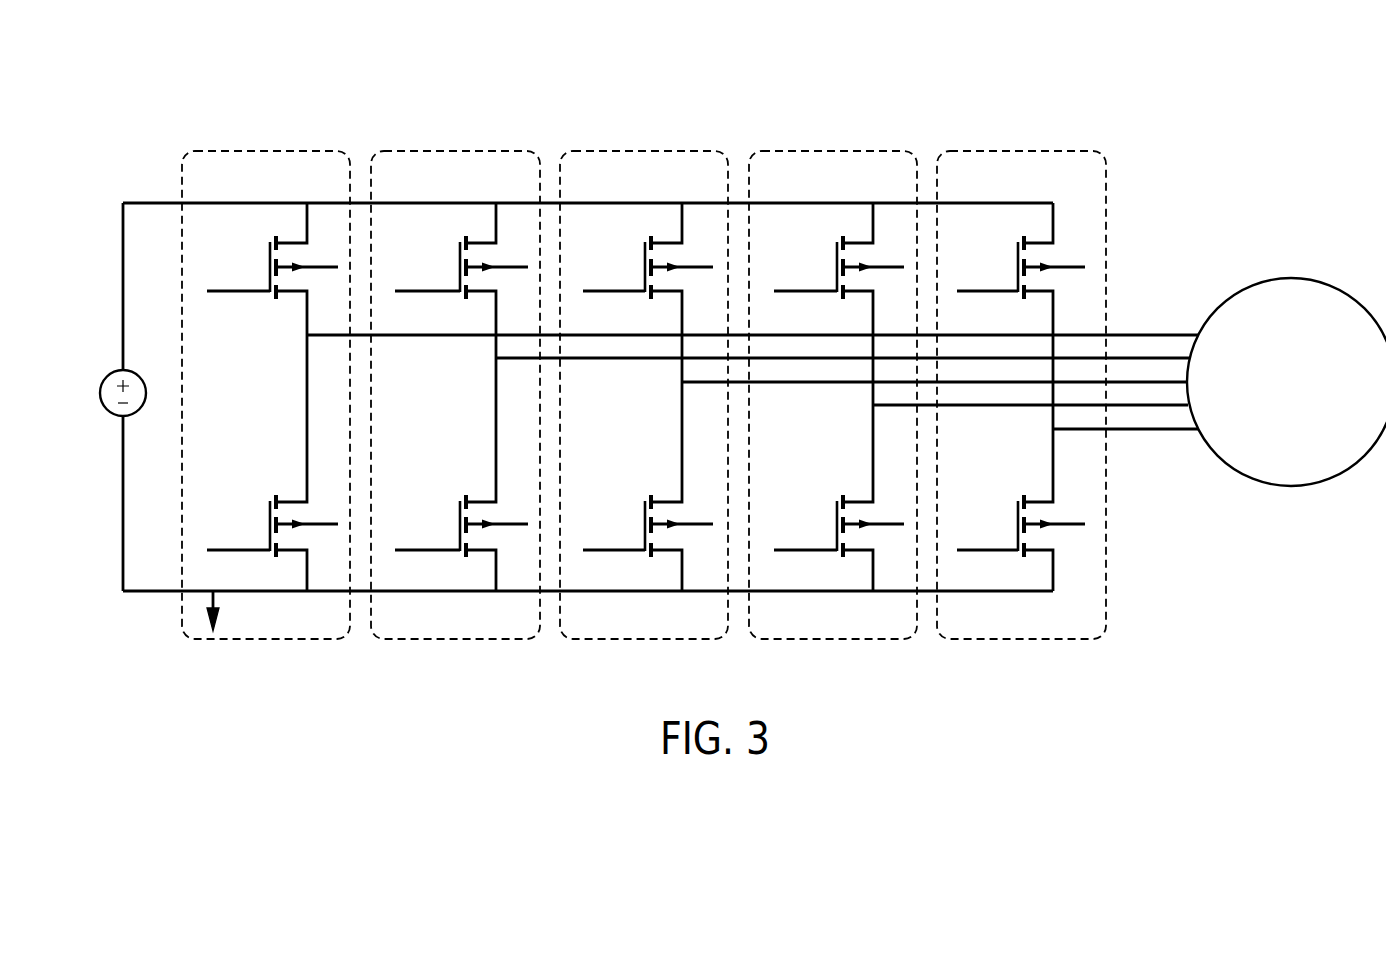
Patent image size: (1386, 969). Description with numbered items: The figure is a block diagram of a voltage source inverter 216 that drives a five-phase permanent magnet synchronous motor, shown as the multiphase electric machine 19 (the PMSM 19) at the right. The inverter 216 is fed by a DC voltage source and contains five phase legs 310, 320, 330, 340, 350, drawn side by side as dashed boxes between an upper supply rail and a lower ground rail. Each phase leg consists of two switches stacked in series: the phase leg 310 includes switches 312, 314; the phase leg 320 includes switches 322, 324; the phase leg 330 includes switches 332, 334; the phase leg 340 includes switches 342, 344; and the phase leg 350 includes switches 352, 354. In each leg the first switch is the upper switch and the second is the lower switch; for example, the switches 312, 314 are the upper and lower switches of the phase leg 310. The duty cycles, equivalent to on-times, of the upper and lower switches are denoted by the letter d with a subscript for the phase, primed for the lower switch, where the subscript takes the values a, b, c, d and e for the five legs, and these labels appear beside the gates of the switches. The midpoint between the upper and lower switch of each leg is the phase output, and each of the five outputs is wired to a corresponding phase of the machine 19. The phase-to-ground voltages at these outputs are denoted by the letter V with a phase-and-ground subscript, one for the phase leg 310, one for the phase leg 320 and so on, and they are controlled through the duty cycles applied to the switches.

The inverter 216 is at (150, 146).
The phase leg 310 is at (272, 150).
The switch 312 is at (258, 244).
The switch 314 is at (258, 499).
The phase leg 320 is at (465, 150).
The switch 322 is at (448, 244).
The switch 324 is at (448, 499).
The phase leg 330 is at (664, 150).
The switch 332 is at (633, 244).
The switch 334 is at (633, 499).
The phase leg 340 is at (860, 150).
The switch 342 is at (825, 244).
The switch 344 is at (825, 499).
The phase leg 350 is at (1024, 150).
The switch 352 is at (1006, 244).
The switch 354 is at (1006, 499).
The multiphase electric machine 19 is at (1288, 278).